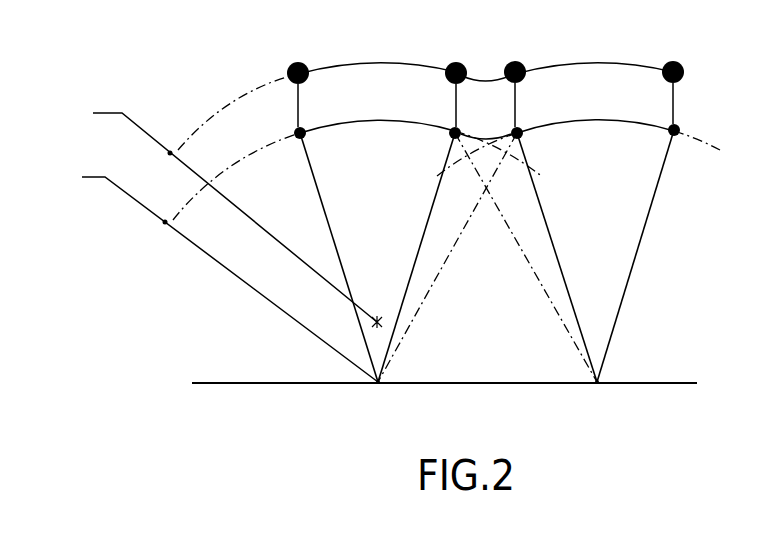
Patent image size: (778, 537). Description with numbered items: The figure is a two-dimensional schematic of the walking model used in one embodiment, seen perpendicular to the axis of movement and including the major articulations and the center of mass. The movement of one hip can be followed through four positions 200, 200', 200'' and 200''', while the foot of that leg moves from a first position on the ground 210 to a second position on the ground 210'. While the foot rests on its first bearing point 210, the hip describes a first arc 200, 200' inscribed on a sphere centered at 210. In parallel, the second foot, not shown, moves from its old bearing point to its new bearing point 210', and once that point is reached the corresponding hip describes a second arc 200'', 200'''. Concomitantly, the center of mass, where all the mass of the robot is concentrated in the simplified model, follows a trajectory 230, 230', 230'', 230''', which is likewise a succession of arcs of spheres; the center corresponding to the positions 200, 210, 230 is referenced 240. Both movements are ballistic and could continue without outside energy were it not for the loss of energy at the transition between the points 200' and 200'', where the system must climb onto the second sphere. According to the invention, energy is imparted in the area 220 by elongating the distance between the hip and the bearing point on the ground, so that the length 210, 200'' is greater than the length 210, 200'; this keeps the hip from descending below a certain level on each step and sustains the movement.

The hip position 200 is at (275, 126).
The hip position 200' is at (432, 118).
The hip position 200'' is at (545, 118).
The hip position 200''' is at (706, 122).
The first position on the ground 210 is at (378, 399).
The second position on the ground 210' is at (597, 399).
The area of energy contribution 220 is at (486, 123).
The center of mass trajectory point 230 is at (285, 80).
The center of mass trajectory point 230' is at (451, 80).
The center of mass trajectory point 230'' is at (525, 80).
The center of mass trajectory point 230''' is at (673, 79).
The center of arc of sphere 240 is at (237, 221).